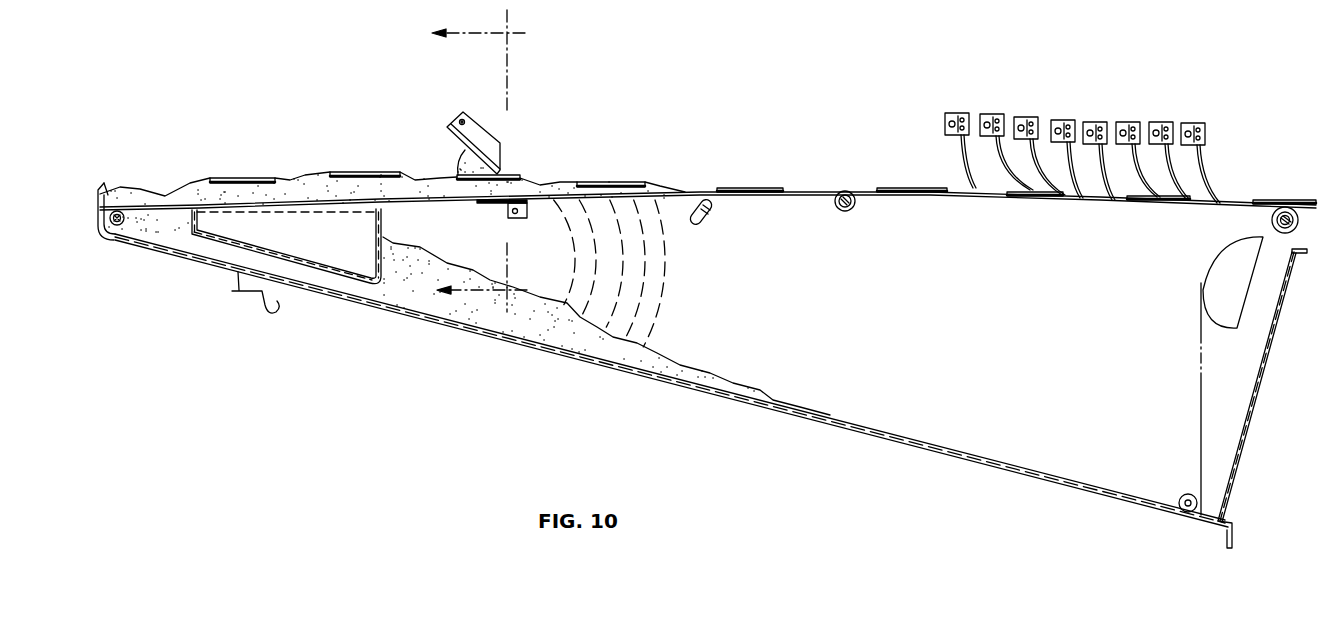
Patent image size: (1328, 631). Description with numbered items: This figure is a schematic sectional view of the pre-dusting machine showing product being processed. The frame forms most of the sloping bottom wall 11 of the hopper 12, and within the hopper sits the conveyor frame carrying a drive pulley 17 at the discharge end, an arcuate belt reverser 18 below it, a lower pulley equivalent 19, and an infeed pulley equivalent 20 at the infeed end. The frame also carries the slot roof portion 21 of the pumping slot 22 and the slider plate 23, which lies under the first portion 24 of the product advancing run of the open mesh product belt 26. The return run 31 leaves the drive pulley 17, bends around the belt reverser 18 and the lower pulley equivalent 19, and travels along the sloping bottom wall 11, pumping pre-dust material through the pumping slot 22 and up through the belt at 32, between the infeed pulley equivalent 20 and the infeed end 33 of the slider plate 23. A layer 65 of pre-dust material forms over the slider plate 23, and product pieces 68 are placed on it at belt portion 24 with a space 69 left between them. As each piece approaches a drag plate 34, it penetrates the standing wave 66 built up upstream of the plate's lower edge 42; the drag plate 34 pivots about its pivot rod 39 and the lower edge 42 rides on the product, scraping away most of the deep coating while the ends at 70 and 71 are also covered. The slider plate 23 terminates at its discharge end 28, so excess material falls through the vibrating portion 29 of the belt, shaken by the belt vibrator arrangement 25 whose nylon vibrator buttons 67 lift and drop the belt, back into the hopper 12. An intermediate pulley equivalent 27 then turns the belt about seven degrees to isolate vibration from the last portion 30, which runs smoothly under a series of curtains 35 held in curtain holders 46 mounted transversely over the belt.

The sloping bottom wall 11 is at (466, 161).
The hopper 12 is at (609, 273).
The drive pulley 17 is at (1270, 220).
The arcuate belt reverser 18 is at (1247, 295).
The lower pulley equivalent 19 is at (1197, 525).
The infeed pulley equivalent 20 is at (127, 219).
The slot roof portion 21 is at (333, 277).
The pumping slot 22 is at (377, 293).
The slider plate 23 is at (480, 203).
The first portion of product advancing run 24 is at (322, 200).
The belt vibrator arrangement 25 is at (694, 224).
The product belt 26 is at (797, 181).
The intermediate pulley equivalent 27 is at (851, 210).
The discharge end of slider plate 28 is at (527, 212).
The vibrating portion of product run 29 is at (692, 184).
The product belt portion under curtains 30 is at (1093, 200).
The return run 31 is at (1200, 445).
The infeed end of product advancing run 32 is at (192, 215).
The infeed end of slider plate 33 is at (160, 206).
The drag plate 34 is at (460, 120).
The curtain 35 is at (1183, 185).
The pivot rod 39 is at (480, 124).
The lower edge of drag plate 42 is at (500, 173).
The curtain holder 46 is at (1205, 130).
The layer of pre-dust material 65 is at (203, 177).
The standing wave 66 is at (450, 129).
The nylon vibrator buttons 67 is at (709, 199).
The product pieces 68 is at (260, 175).
The space between product pieces 69 is at (307, 163).
The product piece end 70 is at (577, 182).
The product piece end 71 is at (645, 182).